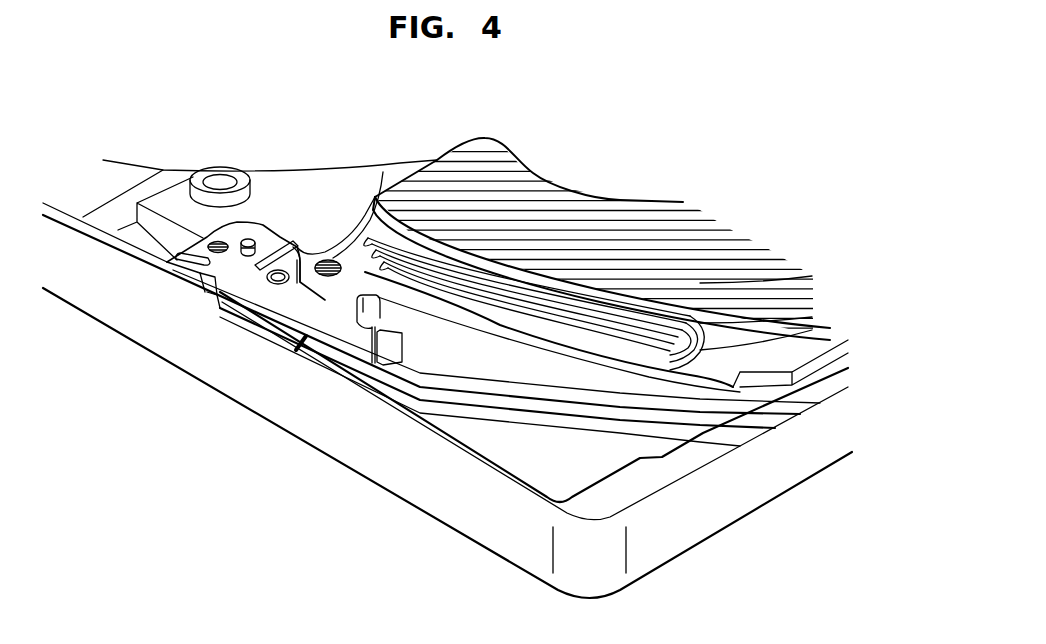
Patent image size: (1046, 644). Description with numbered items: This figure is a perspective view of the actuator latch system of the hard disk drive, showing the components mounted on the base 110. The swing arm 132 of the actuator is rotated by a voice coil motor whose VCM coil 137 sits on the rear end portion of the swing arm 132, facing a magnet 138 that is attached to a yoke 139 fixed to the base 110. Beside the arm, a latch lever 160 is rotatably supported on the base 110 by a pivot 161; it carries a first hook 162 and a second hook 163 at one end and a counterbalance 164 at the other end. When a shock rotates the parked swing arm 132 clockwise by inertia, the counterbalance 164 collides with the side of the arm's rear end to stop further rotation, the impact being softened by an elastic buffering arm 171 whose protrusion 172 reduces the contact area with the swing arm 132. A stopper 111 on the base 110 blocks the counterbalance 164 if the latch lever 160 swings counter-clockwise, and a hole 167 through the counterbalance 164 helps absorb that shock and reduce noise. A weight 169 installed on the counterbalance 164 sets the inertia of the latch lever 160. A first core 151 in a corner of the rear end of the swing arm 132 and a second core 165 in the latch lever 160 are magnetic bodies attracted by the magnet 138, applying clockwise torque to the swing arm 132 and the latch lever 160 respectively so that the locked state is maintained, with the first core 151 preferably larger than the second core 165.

The base 110 is at (658, 550).
The stopper 111 is at (203, 280).
The swing arm 132 is at (613, 367).
The VCM coil 137 is at (633, 338).
The magnet 138 is at (757, 320).
The yoke 139 is at (715, 383).
The first core 151 is at (335, 258).
The latch lever 160 is at (300, 337).
The pivot 161 is at (272, 283).
The first hook 162 is at (367, 335).
The second hook 163 is at (388, 332).
The counterbalance 164 is at (273, 237).
The second core 165 is at (248, 240).
The hole 167 is at (192, 257).
The weight 169 is at (218, 245).
The buffering arm 171 is at (293, 247).
The protrusion 172 is at (322, 247).